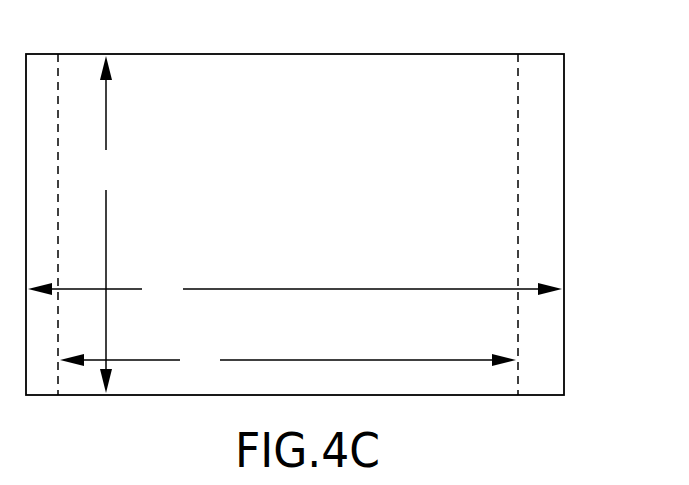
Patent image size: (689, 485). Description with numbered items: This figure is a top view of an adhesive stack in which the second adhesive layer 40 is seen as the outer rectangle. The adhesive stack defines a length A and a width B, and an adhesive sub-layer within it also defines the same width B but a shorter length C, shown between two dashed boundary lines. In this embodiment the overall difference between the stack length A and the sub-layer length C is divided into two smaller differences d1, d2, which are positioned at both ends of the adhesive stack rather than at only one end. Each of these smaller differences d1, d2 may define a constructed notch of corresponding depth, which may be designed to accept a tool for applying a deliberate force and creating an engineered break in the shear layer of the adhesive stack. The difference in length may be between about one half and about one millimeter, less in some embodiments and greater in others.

The second adhesive layer 40 is at (547, 126).
The first smaller difference d1 is at (45, 209).
The second smaller difference d2 is at (539, 209).
The length of the adhesive stack A is at (295, 286).
The width B is at (105, 224).
The length of the adhesive sub-layer C is at (288, 358).